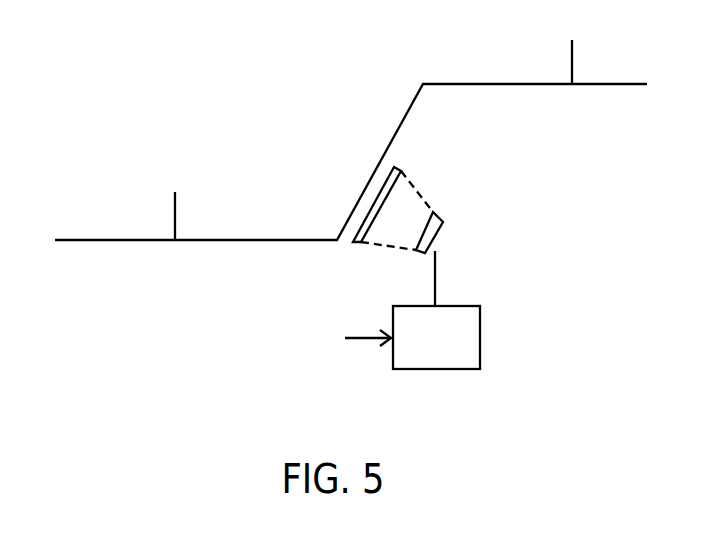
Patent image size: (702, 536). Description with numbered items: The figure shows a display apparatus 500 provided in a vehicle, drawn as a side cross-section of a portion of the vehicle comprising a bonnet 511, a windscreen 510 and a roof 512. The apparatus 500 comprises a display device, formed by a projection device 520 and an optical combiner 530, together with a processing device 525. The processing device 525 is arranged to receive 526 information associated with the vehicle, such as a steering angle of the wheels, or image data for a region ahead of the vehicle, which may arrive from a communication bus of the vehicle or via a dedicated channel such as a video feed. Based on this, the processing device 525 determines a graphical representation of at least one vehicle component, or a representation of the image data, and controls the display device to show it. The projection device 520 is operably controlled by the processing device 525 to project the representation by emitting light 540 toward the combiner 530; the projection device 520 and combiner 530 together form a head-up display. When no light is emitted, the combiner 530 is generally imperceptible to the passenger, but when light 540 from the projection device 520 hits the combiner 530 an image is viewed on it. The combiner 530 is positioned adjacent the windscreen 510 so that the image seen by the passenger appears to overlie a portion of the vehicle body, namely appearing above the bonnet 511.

The display apparatus 500 is at (552, 202).
The windscreen 510 is at (395, 135).
The bonnet 511 is at (175, 198).
The roof 512 is at (572, 42).
The projection device 520 is at (465, 259).
The processing device 525 is at (436, 337).
The receiving of information 526 is at (336, 340).
The optical combiner 530 is at (397, 164).
The light 540 is at (408, 215).